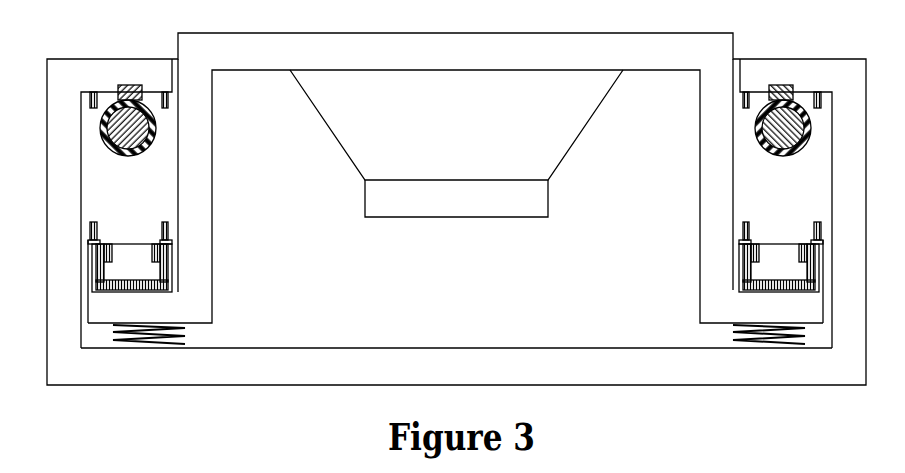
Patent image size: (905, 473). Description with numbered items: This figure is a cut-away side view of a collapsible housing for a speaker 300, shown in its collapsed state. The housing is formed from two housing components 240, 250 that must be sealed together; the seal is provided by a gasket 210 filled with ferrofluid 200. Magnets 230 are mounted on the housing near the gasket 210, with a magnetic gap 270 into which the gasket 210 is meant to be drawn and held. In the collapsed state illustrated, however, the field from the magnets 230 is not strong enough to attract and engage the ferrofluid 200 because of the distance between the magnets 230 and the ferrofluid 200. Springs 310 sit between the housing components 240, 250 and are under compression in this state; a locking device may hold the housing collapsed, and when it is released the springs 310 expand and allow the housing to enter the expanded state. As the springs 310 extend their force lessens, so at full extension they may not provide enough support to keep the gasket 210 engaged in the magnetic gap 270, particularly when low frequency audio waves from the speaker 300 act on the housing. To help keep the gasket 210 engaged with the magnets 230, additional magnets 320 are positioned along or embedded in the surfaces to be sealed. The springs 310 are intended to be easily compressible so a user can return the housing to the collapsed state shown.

The ferrofluid 200 is at (137, 124).
The gasket 210 is at (101, 134).
The magnets 230 is at (102, 270).
The housing component 240 is at (205, 254).
The housing component 250 is at (165, 375).
The magnetic gap 270 is at (126, 252).
The speaker 300 is at (528, 172).
The springs 310 is at (107, 338).
The additional magnets 320 is at (88, 100).